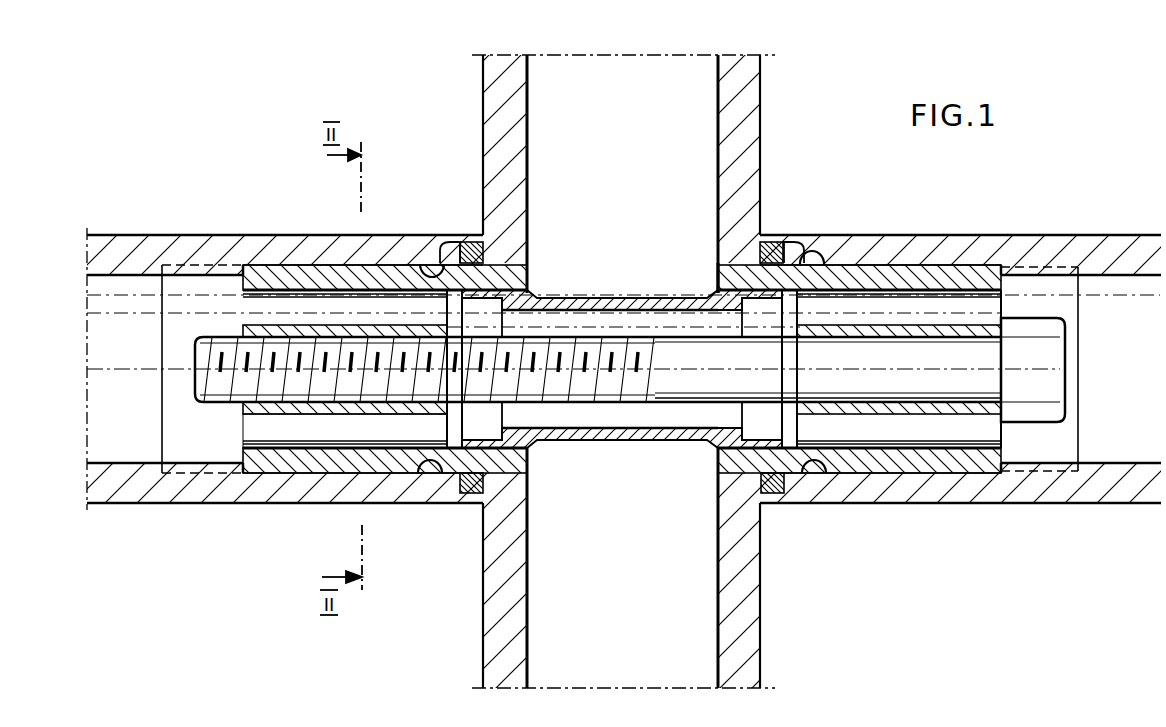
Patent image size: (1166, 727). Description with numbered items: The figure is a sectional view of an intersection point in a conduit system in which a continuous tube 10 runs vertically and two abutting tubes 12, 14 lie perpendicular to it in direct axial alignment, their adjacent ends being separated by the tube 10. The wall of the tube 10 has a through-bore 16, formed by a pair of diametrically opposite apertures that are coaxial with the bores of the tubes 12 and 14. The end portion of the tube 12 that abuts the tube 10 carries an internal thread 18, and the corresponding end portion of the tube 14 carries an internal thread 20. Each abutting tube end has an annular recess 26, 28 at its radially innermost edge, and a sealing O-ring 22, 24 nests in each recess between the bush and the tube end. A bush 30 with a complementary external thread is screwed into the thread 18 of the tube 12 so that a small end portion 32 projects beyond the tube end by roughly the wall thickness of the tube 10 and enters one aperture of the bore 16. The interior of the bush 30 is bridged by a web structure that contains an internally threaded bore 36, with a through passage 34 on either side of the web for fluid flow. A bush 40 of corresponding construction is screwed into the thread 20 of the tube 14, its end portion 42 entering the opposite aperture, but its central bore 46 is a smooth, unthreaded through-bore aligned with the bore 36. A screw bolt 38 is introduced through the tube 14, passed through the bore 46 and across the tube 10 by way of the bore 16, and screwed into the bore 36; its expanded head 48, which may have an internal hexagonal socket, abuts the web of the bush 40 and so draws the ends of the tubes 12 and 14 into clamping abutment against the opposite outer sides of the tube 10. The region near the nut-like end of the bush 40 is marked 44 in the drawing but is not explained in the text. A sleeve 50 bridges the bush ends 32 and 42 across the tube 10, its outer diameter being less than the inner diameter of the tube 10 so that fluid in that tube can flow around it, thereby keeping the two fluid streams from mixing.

The continuous tube 10 is at (747, 123).
The abutting tube 12 is at (382, 235).
The abutting tube 14 is at (988, 235).
The through-bore 16 is at (718, 262).
The internal thread 18 is at (195, 270).
The internal thread 20 is at (1068, 235).
The sealing O-ring 22 is at (460, 238).
The sealing O-ring 24 is at (780, 235).
The annular recess 26 is at (473, 238).
The annular recess 28 is at (803, 235).
The bush 30 is at (287, 280).
The projecting end portion of bush 32 is at (483, 507).
The through passage 34 is at (252, 432).
The internally threaded bore 36 is at (284, 402).
The screw bolt 38 is at (217, 355).
The bush 40 is at (902, 465).
The projecting end portion of bush 42 is at (768, 478).
The end of right sleeve 44 is at (990, 430).
The central bore 46 is at (926, 394).
The head of the bolt 48 is at (1050, 412).
The sleeve 50 is at (655, 440).